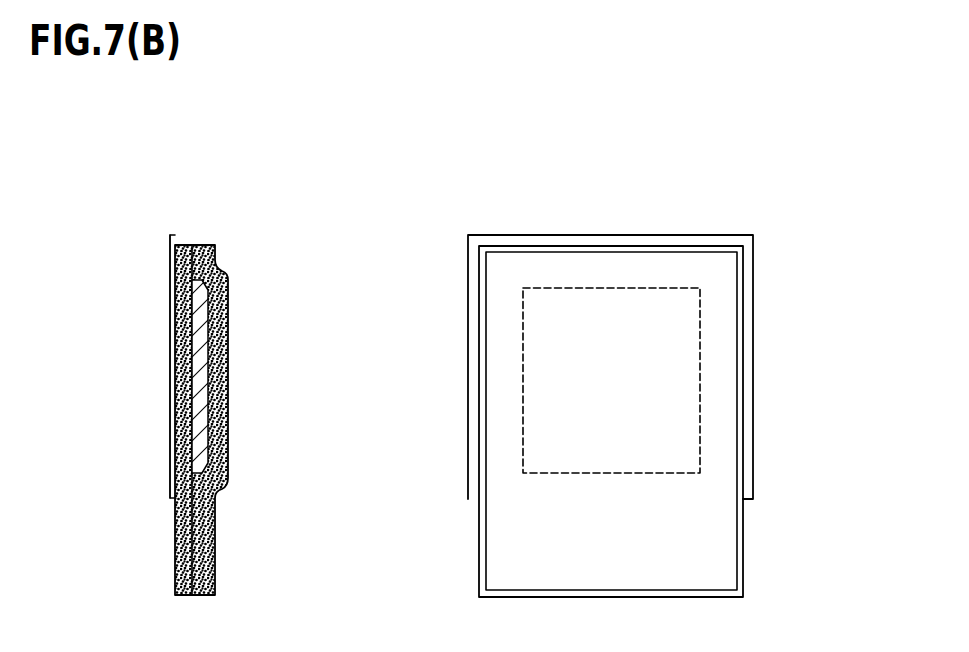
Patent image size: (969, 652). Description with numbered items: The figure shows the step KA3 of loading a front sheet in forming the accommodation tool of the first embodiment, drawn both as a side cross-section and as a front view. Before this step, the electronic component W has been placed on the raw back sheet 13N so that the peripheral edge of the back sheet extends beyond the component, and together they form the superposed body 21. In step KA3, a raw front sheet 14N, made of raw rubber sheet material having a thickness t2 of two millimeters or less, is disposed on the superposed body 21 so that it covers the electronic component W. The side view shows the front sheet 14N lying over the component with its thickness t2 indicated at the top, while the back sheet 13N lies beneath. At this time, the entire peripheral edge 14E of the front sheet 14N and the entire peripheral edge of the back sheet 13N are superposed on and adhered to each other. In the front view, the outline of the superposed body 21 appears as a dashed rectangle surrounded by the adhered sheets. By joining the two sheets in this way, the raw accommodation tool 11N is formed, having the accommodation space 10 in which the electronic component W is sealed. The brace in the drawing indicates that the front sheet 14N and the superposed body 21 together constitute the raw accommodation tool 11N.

The accommodation space 10 is at (192, 360).
The electronic component W is at (192, 343).
The raw front sheet 14N is at (230, 350).
The peripheral edge of the front sheet 14E is at (205, 257).
The superposed body 21 is at (203, 415).
The raw accommodation tool 11N is at (372, 270).
The raw back sheet 13N is at (743, 572).
The thickness of the front sheet t2 is at (215, 244).
The step of disposing a raw front sheet KA3 is at (462, 140).